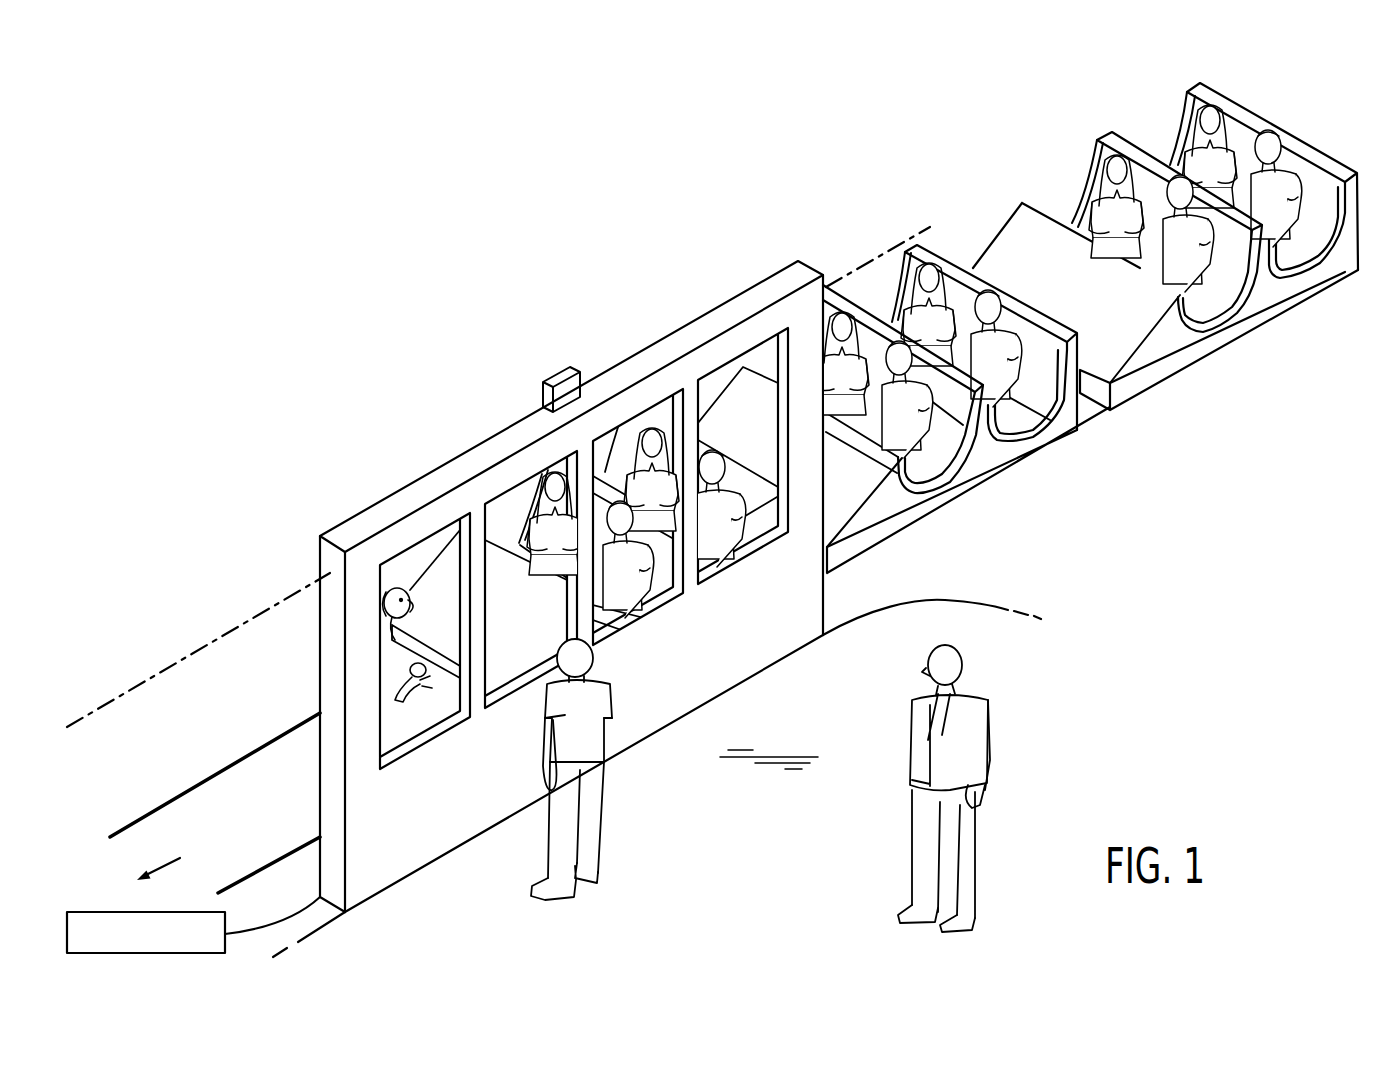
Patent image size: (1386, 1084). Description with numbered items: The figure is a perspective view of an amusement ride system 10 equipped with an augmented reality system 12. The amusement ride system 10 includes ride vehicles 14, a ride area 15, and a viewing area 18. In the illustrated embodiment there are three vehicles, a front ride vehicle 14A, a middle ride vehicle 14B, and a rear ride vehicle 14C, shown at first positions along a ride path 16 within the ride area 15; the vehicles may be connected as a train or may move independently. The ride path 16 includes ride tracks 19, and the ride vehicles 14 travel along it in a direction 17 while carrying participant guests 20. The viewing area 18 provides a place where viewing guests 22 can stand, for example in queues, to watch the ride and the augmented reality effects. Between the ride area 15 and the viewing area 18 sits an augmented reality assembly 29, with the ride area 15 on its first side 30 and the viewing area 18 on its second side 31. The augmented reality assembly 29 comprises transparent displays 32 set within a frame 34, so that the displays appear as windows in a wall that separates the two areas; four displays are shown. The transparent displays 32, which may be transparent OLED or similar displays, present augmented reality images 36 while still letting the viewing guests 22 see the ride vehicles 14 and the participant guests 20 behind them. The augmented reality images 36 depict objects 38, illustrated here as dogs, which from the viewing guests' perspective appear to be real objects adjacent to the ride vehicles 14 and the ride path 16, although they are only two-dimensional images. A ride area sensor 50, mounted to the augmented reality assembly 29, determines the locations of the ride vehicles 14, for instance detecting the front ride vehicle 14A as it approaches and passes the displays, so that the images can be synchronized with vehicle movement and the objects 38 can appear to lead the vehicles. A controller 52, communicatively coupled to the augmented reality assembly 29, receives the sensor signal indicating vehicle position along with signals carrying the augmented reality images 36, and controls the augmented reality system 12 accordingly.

The amusement ride system 10 is at (1366, 94).
The augmented reality system 12 is at (580, 289).
The ride vehicles 14 is at (1217, 72).
The front ride vehicle 14A is at (585, 545).
The middle ride vehicle 14B is at (920, 240).
The rear ride vehicle 14C is at (1214, 231).
The ride area 15 is at (154, 704).
The ride path 16 is at (145, 790).
The direction 17 is at (167, 869).
The viewing area 18 is at (657, 778).
The ride tracks 19 is at (215, 773).
The participant guests 20 is at (1096, 152).
The viewing guests 22 is at (612, 693).
The augmented reality assembly 29 is at (682, 299).
The first side 30 is at (289, 692).
The second side 31 is at (746, 924).
The transparent displays 32 is at (427, 538).
The frame 34 is at (360, 522).
The augmented reality images 36 is at (437, 721).
The objects 38 is at (386, 622).
The ride area sensor 50 is at (545, 380).
The controller 52 is at (90, 912).